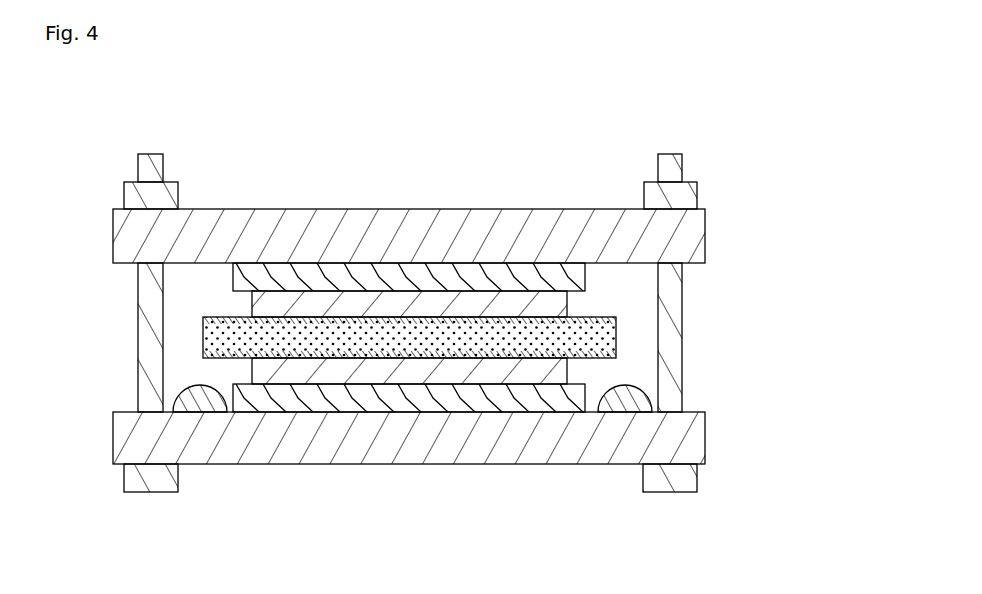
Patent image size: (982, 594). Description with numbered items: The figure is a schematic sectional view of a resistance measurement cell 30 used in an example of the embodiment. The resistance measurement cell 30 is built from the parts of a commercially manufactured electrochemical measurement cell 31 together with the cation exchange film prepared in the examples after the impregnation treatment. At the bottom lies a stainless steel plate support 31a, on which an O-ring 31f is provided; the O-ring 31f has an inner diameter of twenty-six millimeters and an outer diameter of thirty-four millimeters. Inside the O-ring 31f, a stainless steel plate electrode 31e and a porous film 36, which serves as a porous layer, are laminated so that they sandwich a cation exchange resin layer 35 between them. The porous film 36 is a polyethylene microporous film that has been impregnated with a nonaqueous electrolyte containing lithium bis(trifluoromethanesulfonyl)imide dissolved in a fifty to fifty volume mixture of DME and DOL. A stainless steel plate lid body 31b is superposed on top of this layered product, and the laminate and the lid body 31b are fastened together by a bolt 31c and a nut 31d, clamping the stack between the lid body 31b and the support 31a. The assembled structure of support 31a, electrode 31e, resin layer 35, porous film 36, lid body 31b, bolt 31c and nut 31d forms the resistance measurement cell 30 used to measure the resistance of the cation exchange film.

The resistance measurement cell 30 is at (628, 138).
The electrochemical measurement cell 31 is at (665, 236).
The stainless steel plate support 31a is at (493, 455).
The stainless steel plate lid body 31b is at (445, 232).
The bolt 31c is at (152, 324).
The nut 31d is at (160, 194).
The stainless steel plate electrode 31e is at (313, 276).
The O-ring 31f is at (200, 402).
The cation exchange resin layer 35 is at (617, 340).
The porous film 36 is at (560, 300).